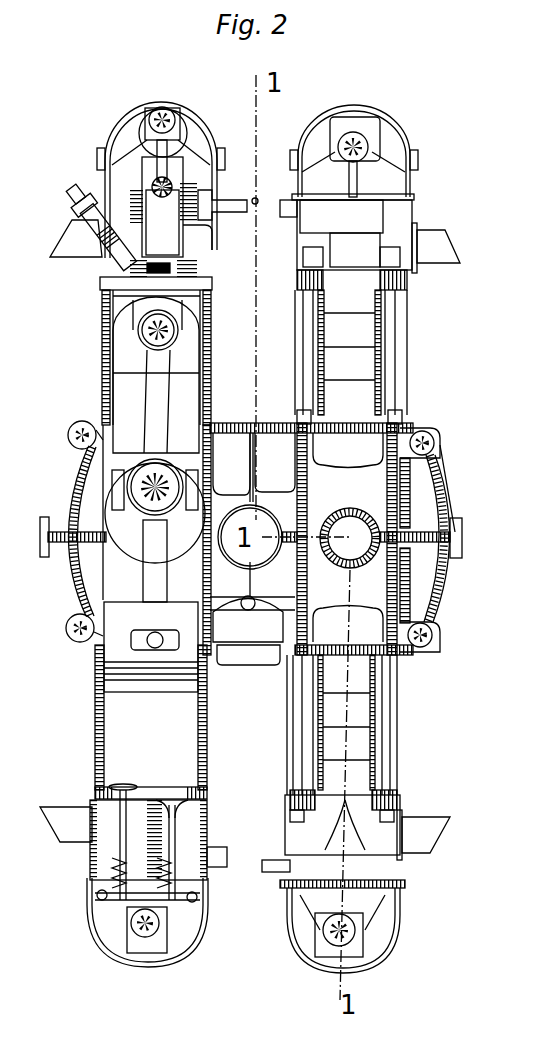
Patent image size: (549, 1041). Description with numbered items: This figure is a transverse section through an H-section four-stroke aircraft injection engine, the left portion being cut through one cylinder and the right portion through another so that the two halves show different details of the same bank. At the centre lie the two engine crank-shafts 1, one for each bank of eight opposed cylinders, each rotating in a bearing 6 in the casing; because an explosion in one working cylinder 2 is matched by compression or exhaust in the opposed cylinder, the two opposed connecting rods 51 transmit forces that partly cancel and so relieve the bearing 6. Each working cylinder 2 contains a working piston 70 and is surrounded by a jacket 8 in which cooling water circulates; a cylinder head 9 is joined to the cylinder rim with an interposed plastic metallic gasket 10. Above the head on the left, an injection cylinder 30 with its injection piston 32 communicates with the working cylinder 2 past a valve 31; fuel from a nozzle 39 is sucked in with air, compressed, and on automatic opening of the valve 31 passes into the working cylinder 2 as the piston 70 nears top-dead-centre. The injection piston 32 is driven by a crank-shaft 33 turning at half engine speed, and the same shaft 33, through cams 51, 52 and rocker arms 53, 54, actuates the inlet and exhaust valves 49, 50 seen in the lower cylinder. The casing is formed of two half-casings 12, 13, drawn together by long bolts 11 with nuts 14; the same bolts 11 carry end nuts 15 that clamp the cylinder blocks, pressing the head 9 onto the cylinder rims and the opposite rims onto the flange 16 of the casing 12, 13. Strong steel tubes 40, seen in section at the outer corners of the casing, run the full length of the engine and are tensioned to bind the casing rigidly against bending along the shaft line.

The engine crank-shaft 1 is at (125, 525).
The working cylinder 2 is at (113, 386).
The bearing 6 is at (380, 558).
The jacket 8 is at (104, 327).
The cylinder head 9 is at (212, 282).
The plastic metallic gasket 10 is at (104, 268).
The bolt 11 is at (306, 348).
The half-casing 12 is at (435, 600).
The half-casing 13 is at (442, 492).
The nut 14 is at (398, 428).
The end nut 15 is at (410, 280).
The flange 16 is at (82, 440).
The injection cylinder 30 is at (183, 244).
The valve 31 is at (160, 280).
The injection piston 32 is at (162, 207).
The crank-shaft 33 is at (168, 124).
The nozzle 39 is at (232, 197).
The steel tube 40 is at (436, 444).
The inlet valve 49 is at (172, 800).
The exhaust valve 50 is at (124, 784).
The connecting rod 51 is at (156, 412).
The cam 52 is at (147, 936).
The rocker arm 53 is at (185, 905).
The rocker arm 54 is at (157, 570).
The working piston 70 is at (130, 294).